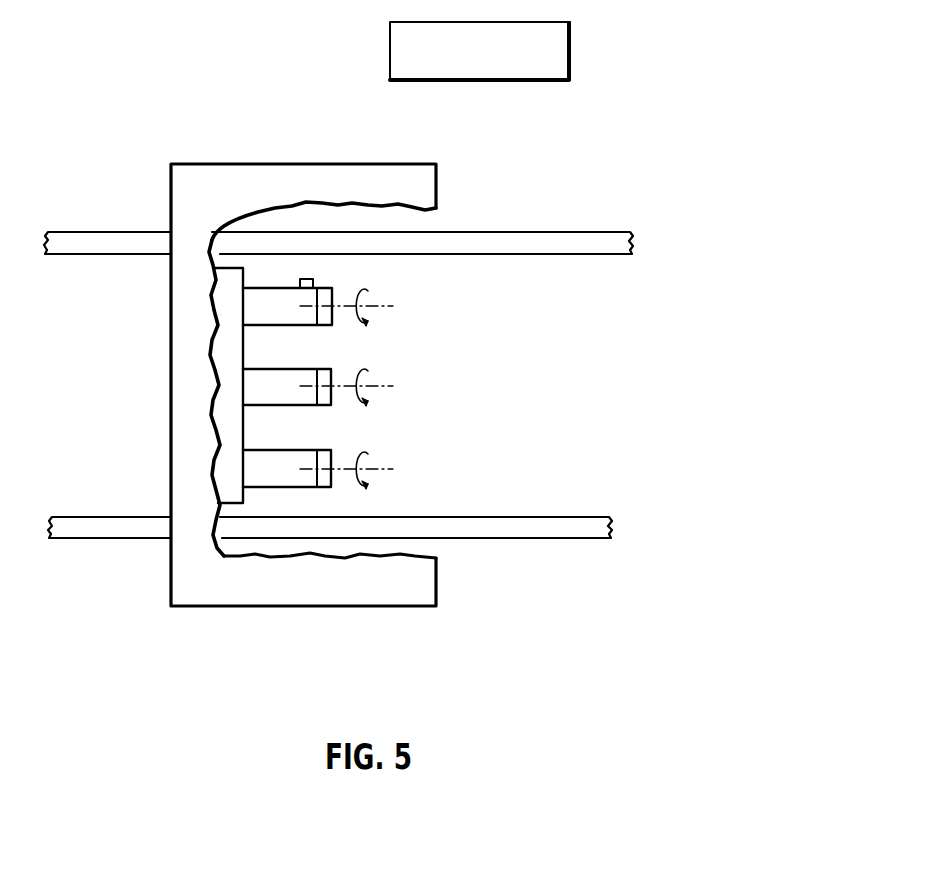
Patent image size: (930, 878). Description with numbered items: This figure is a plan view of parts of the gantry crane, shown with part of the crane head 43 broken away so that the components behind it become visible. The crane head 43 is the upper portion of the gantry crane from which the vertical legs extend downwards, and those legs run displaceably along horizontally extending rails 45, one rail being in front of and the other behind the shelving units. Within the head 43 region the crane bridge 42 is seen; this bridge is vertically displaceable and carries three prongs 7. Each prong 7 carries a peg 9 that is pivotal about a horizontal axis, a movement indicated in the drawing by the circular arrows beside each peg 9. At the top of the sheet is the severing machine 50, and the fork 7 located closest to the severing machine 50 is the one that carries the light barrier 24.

The severing machine 50 is at (553, 50).
The rails 45 is at (86, 236).
The crane head 43 is at (185, 384).
The crane bridge 42 is at (222, 307).
The prongs 7 is at (278, 314).
The peg 9 is at (325, 292).
The light barrier 24 is at (305, 279).